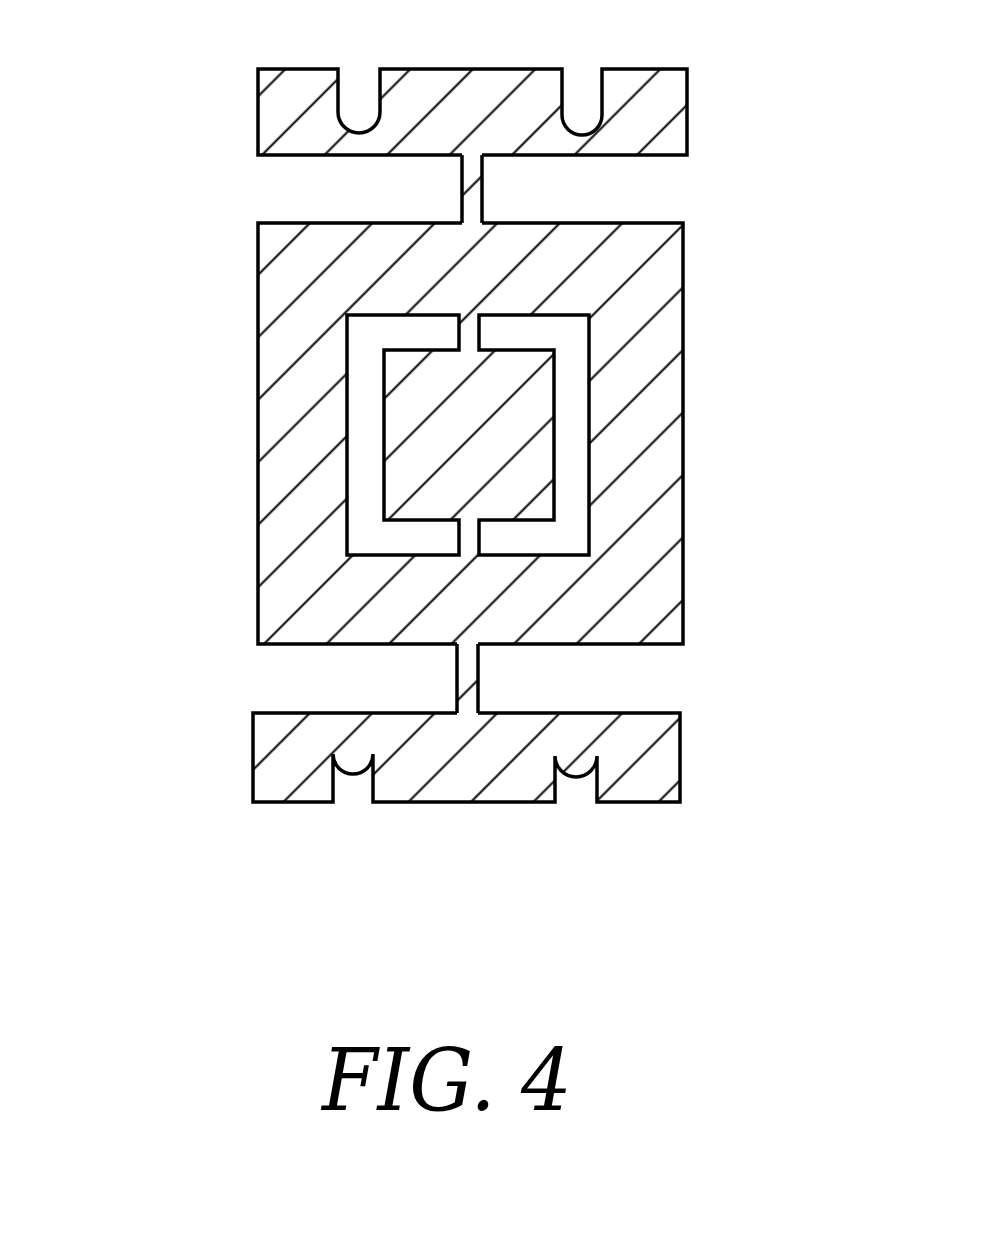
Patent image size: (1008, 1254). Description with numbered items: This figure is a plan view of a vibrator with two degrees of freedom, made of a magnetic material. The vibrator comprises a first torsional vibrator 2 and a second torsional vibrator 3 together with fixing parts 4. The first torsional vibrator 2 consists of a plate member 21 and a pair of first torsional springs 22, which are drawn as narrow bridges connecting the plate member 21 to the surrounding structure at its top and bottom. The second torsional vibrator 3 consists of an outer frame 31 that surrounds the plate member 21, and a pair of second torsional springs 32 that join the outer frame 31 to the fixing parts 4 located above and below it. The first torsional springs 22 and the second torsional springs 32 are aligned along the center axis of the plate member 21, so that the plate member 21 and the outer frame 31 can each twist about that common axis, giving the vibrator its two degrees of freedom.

The first torsional vibrator 2 is at (615, 489).
The plate member 21 is at (543, 497).
The first torsional springs 22 is at (472, 328).
The second torsional vibrator 3 is at (373, 434).
The outer frame 31 is at (273, 298).
The second torsional springs 32 is at (466, 207).
The fixing parts 4 is at (452, 68).